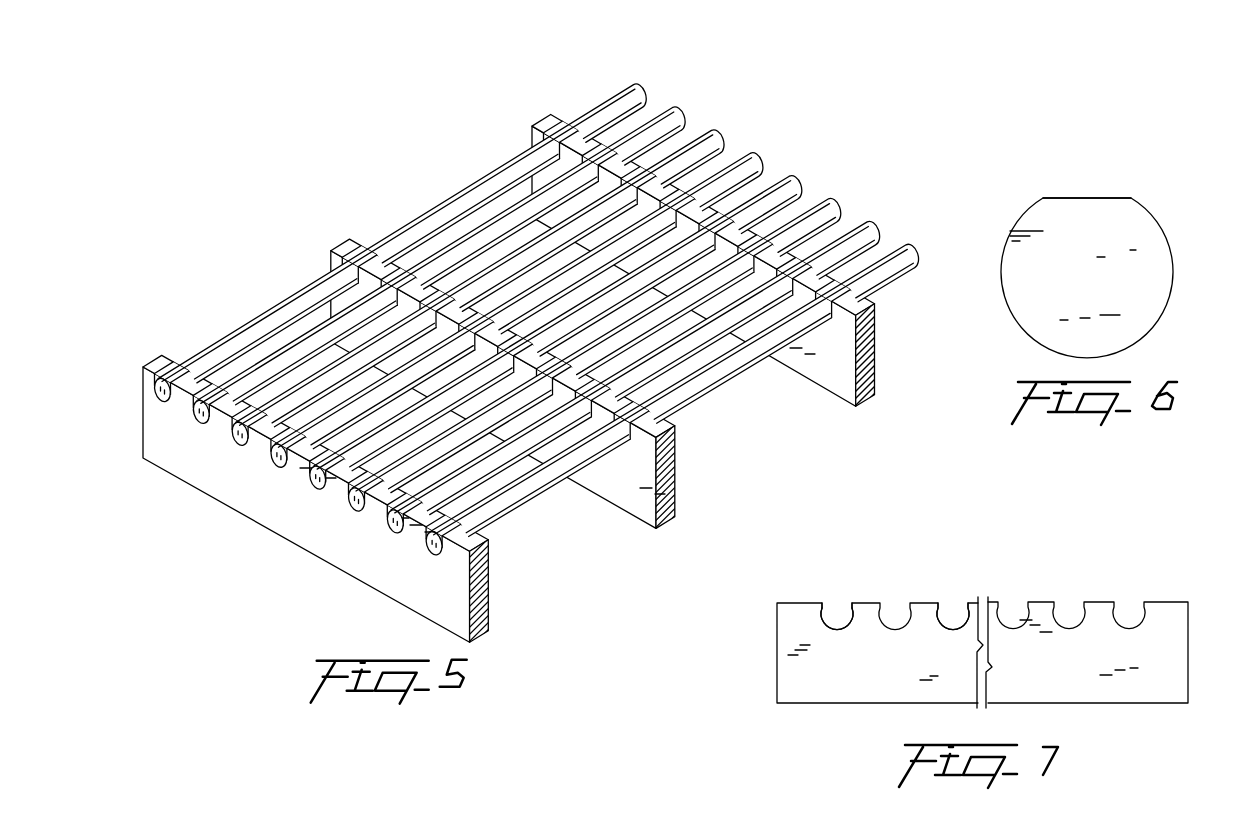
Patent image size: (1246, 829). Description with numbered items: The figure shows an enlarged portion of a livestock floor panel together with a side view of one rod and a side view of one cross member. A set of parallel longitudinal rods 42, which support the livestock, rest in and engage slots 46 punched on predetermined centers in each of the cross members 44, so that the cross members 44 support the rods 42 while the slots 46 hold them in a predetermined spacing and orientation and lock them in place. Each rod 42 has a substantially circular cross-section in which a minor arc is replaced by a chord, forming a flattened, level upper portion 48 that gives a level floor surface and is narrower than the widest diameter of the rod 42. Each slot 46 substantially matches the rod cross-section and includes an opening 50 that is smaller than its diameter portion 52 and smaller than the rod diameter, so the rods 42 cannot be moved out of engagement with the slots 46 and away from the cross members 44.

In FIG. 5, the longitudinal rod 42 is at (290, 397).
In FIG. 6, the longitudinal rod 42 is at (1167, 238).
In FIG. 5, the cross member 44 is at (153, 363).
In FIG. 7, the cross member 44 is at (1190, 653).
In FIG. 5, the slot 46 is at (563, 124).
In FIG. 7, the slot 46 is at (945, 615).
In FIG. 5, the flattened upper portion 48 is at (450, 198).
In FIG. 6, the flattened upper portion 48 is at (1100, 198).
In FIG. 7, the opening 50 is at (837, 605).
In FIG. 7, the diameter portion 52 is at (847, 620).